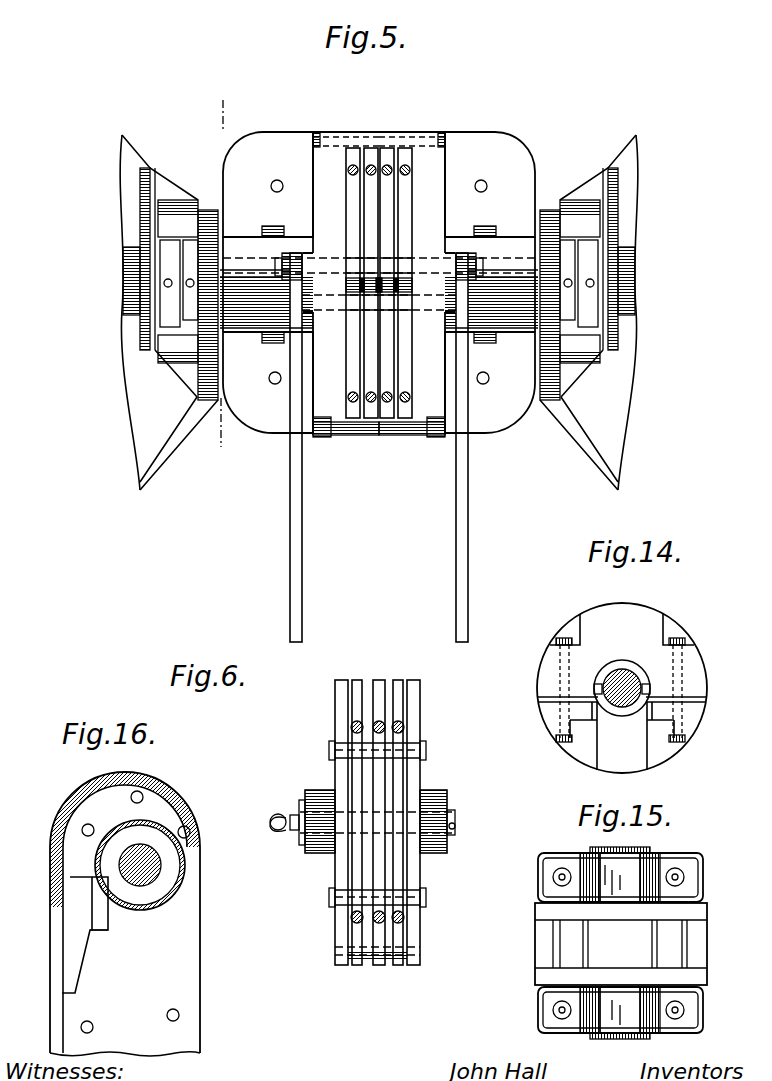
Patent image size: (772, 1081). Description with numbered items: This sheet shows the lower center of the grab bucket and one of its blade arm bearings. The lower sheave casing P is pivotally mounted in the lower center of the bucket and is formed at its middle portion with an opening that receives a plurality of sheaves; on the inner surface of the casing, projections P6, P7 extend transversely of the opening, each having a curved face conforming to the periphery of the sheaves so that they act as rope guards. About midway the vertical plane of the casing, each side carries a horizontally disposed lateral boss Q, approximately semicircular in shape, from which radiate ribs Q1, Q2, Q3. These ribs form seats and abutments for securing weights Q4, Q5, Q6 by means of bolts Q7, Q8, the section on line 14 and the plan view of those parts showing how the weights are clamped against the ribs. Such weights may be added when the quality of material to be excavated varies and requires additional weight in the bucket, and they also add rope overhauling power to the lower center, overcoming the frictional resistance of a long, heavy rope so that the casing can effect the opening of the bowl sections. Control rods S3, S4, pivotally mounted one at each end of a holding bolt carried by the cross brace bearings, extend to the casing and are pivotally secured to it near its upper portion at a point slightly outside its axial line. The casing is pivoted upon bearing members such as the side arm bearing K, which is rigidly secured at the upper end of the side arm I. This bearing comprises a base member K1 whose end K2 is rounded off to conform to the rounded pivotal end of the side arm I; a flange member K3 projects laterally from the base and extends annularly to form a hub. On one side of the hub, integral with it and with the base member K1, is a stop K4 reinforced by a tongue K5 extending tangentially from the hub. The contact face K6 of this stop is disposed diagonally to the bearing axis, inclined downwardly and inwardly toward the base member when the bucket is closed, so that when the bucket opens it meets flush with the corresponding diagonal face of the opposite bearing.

In FIG. 5, the lower sheave casing P is at (470, 130).
In FIG. 5, the lateral boss Q is at (231, 250).
In FIG. 14, the lateral boss Q is at (613, 672).
In FIG. 5, the rib Q1 is at (261, 156).
In FIG. 14, the rib Q1 is at (552, 710).
In FIG. 5, the rib Q2 is at (268, 420).
In FIG. 14, the rib Q2 is at (690, 710).
In FIG. 14, the rib Q3 is at (623, 763).
In FIG. 14, the weight Q4 is at (632, 620).
In FIG. 15, the weight Q4 is at (607, 870).
In FIG. 14, the weight Q5 is at (587, 748).
In FIG. 14, the weight Q6 is at (655, 749).
In FIG. 14, the bolt Q7 is at (563, 670).
In FIG. 14, the bolt Q8 is at (673, 675).
In FIG. 15, the bolt Q8 is at (683, 880).
In FIG. 15, the projection P6 is at (613, 938).
In FIG. 15, the projection P7 is at (645, 928).
In FIG. 5, the control rod S3 is at (300, 548).
In FIG. 5, the control rod S4 is at (460, 533).
In FIG. 16, the side arm bearing K is at (203, 852).
In FIG. 16, the base member K1 is at (130, 982).
In FIG. 16, the rounded end K2 is at (136, 814).
In FIG. 5, the flange member K3 is at (170, 299).
In FIG. 16, the flange member K3 is at (128, 853).
In FIG. 5, the stop K4 is at (157, 195).
In FIG. 16, the stop K4 is at (100, 893).
In FIG. 5, the reinforcing tongue K5 is at (176, 203).
In FIG. 16, the reinforcing tongue K5 is at (80, 968).
In FIG. 16, the contact face K6 is at (62, 897).
In FIG. 16, the side arm I is at (60, 808).
In FIG. 5, the section line 14 is at (223, 282).